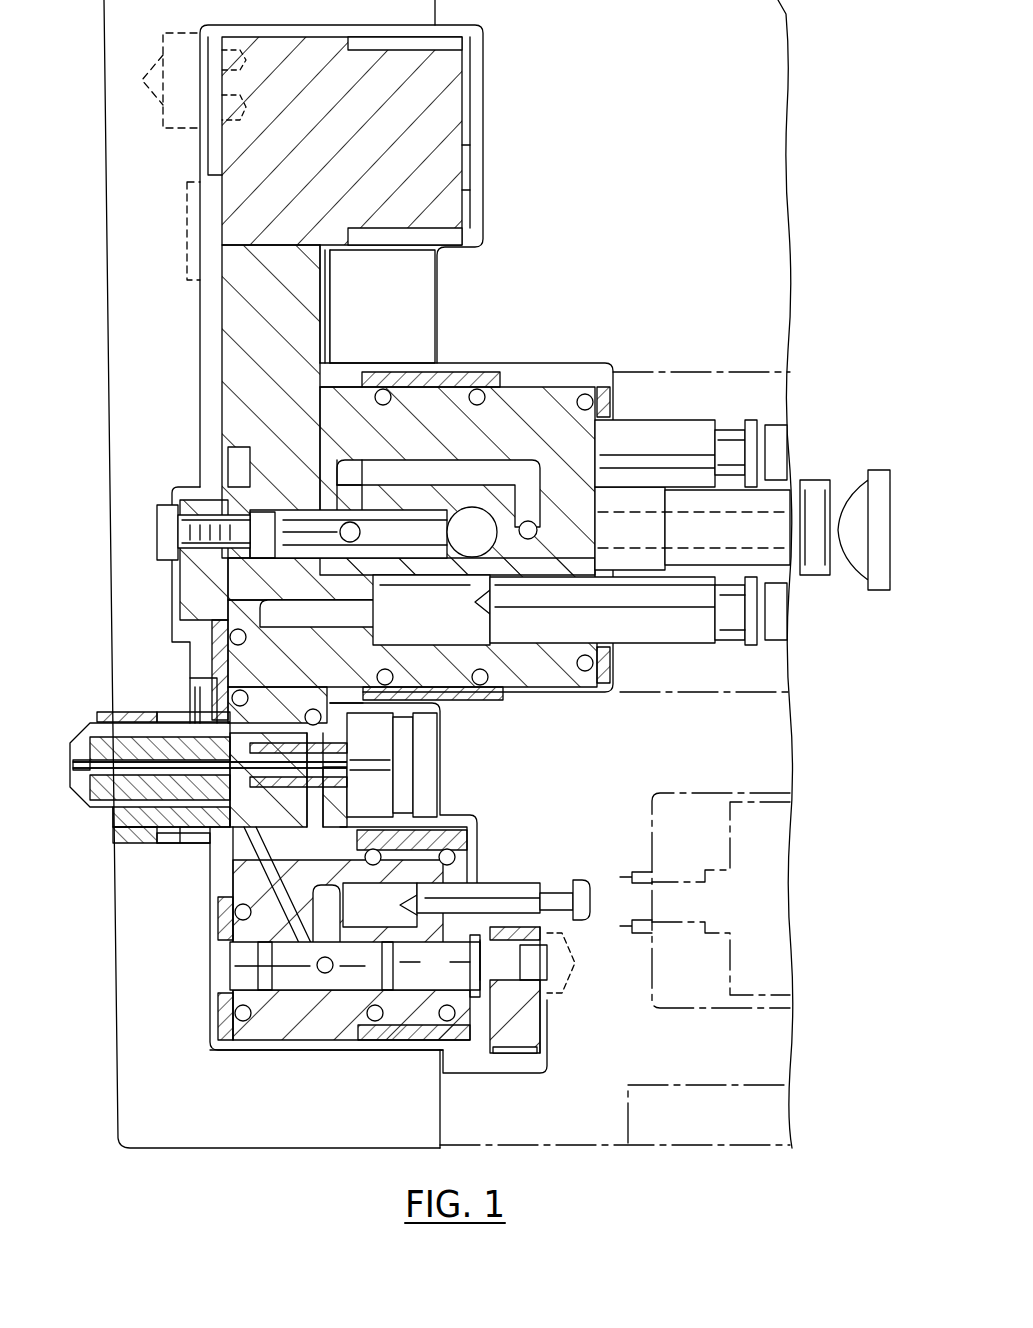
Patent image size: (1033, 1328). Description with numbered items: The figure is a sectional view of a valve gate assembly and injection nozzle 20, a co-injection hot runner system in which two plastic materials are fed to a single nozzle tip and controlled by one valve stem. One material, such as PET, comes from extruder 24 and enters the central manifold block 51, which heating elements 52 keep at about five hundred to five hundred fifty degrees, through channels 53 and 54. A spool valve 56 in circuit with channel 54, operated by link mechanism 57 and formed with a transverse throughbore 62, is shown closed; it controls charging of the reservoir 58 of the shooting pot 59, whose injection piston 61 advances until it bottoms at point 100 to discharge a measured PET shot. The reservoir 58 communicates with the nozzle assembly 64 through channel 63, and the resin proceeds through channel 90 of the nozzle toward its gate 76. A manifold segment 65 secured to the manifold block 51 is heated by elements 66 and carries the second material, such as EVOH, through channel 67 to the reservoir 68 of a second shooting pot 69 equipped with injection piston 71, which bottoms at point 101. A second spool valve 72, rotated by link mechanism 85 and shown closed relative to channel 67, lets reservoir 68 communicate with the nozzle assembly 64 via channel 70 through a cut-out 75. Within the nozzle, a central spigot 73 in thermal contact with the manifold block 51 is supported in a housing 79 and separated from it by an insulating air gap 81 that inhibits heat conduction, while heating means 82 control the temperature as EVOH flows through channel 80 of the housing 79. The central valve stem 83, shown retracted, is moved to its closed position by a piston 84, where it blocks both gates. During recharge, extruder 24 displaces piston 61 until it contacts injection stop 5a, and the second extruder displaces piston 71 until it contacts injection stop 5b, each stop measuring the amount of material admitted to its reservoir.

The valve gate assembly and injection nozzle 20 is at (610, 250).
The extruder 24 is at (862, 468).
The central manifold block 51 is at (235, 377).
The heating elements 52 is at (477, 390).
The channel 53 is at (693, 545).
The channel 54 is at (455, 472).
The spool valve 56 is at (290, 515).
The link mechanism 57 is at (180, 582).
The reservoir 58 is at (432, 632).
The shooting pot 59 is at (635, 650).
The injection piston 61 is at (596, 601).
The transverse throughbore 62 is at (350, 522).
The channel 63 is at (345, 600).
The nozzle assembly 64 is at (185, 759).
The manifold segment 65 is at (205, 1020).
The heating elements 66 is at (235, 912).
The channel 67 is at (318, 900).
The reservoir 68 is at (360, 920).
The second shooting pot 69 is at (572, 947).
The channel 70 is at (252, 872).
The injection piston 71 is at (528, 893).
The spool valve 72 is at (415, 980).
The central spigot 73 is at (211, 839).
The cut-out 75 is at (310, 948).
The gate 76 is at (75, 766).
The housing 79 is at (165, 843).
The channel 80 is at (110, 830).
The insulating air gap 81 is at (128, 740).
The heating means 82 is at (132, 838).
The central valve stem 83 is at (90, 795).
The piston 84 is at (405, 775).
The link mechanism 85 is at (530, 1030).
The channel 90 is at (100, 712).
The bottoming point 100 is at (395, 590).
The bottoming point 101 is at (465, 880).
The injection stop 5a is at (755, 642).
The injection stop 5b is at (590, 880).